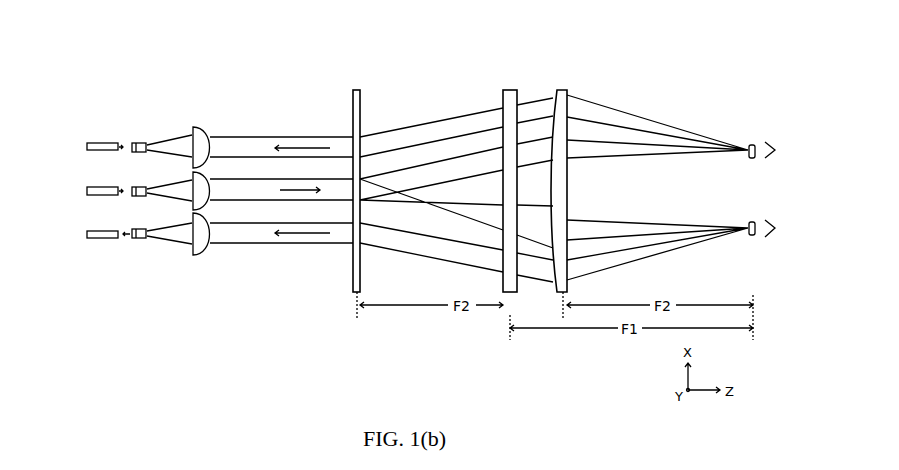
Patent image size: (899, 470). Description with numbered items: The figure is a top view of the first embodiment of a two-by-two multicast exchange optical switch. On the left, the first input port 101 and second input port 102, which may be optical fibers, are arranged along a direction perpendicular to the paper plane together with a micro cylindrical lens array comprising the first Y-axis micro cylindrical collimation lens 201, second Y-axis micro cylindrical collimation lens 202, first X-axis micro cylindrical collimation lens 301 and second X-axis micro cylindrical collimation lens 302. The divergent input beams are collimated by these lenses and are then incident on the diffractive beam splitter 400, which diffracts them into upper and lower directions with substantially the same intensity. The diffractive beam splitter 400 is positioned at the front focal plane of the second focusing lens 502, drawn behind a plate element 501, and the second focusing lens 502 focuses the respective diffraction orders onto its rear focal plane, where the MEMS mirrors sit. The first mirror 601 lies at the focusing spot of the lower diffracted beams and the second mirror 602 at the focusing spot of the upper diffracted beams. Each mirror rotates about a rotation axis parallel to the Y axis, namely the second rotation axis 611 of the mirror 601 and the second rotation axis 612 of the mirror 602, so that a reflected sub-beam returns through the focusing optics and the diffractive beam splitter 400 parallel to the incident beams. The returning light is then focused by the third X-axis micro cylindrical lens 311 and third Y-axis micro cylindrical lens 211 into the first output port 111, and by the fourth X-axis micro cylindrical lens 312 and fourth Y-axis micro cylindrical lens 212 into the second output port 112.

The second output port 112 is at (87, 147).
The fourth Y-axis micro cylindrical lens 212 is at (141, 153).
The fourth X-axis micro cylindrical lens 312 is at (211, 134).
The first input port 101 is at (93, 199).
The second input port 102 is at (87, 191).
The first Y-axis micro cylindrical collimation lens 201 is at (143, 208).
The second Y-axis micro cylindrical collimation lens 202 is at (142, 196).
The first X-axis micro cylindrical collimation lens 301 is at (245, 187).
The second X-axis micro cylindrical collimation lens 302 is at (212, 173).
The first output port 111 is at (87, 237).
The third Y-axis micro cylindrical lens 211 is at (142, 240).
The third X-axis micro cylindrical lens 311 is at (212, 217).
The diffractive beam splitter 400 is at (354, 88).
The first lens plate 501 is at (507, 88).
The second focusing lens 502 is at (559, 88).
The second rotation axis of the mirror 602 612 is at (754, 143).
The second mirror 602 is at (767, 159).
The second rotation axis of the mirror 601 611 is at (754, 221).
The first mirror 601 is at (767, 237).